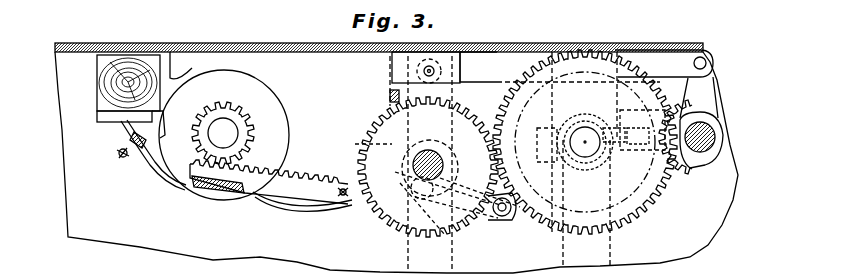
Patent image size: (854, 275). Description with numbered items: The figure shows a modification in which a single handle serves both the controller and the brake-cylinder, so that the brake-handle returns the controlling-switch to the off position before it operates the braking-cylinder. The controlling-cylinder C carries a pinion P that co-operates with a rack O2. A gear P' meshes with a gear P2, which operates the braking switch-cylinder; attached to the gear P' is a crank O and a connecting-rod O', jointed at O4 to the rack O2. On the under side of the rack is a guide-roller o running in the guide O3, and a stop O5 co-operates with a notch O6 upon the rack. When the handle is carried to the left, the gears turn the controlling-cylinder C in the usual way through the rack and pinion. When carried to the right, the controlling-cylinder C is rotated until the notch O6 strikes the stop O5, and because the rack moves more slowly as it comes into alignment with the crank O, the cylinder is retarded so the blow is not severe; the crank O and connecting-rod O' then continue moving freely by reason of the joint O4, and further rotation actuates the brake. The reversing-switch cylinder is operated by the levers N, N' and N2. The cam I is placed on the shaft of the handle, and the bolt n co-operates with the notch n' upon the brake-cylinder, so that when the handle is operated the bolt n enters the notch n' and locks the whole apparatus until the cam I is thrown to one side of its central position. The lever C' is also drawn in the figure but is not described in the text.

The controlling-cylinder C is at (224, 135).
The casing lever C' is at (151, 163).
The pinion P is at (231, 133).
The gear P' is at (420, 164).
The gear P2 is at (568, 223).
The crank O is at (503, 220).
The connecting-rod O' is at (457, 221).
The rack O2 is at (301, 182).
The guide O3 is at (364, 147).
The joint O4 is at (395, 225).
The stop O5 is at (333, 199).
The notch O6 is at (389, 181).
The guide-roller o is at (343, 188).
The lever N is at (586, 66).
The lever N' is at (720, 119).
The lever N2 is at (440, 90).
The bolt n is at (674, 159).
The notch n' is at (592, 156).
The cam I is at (697, 163).